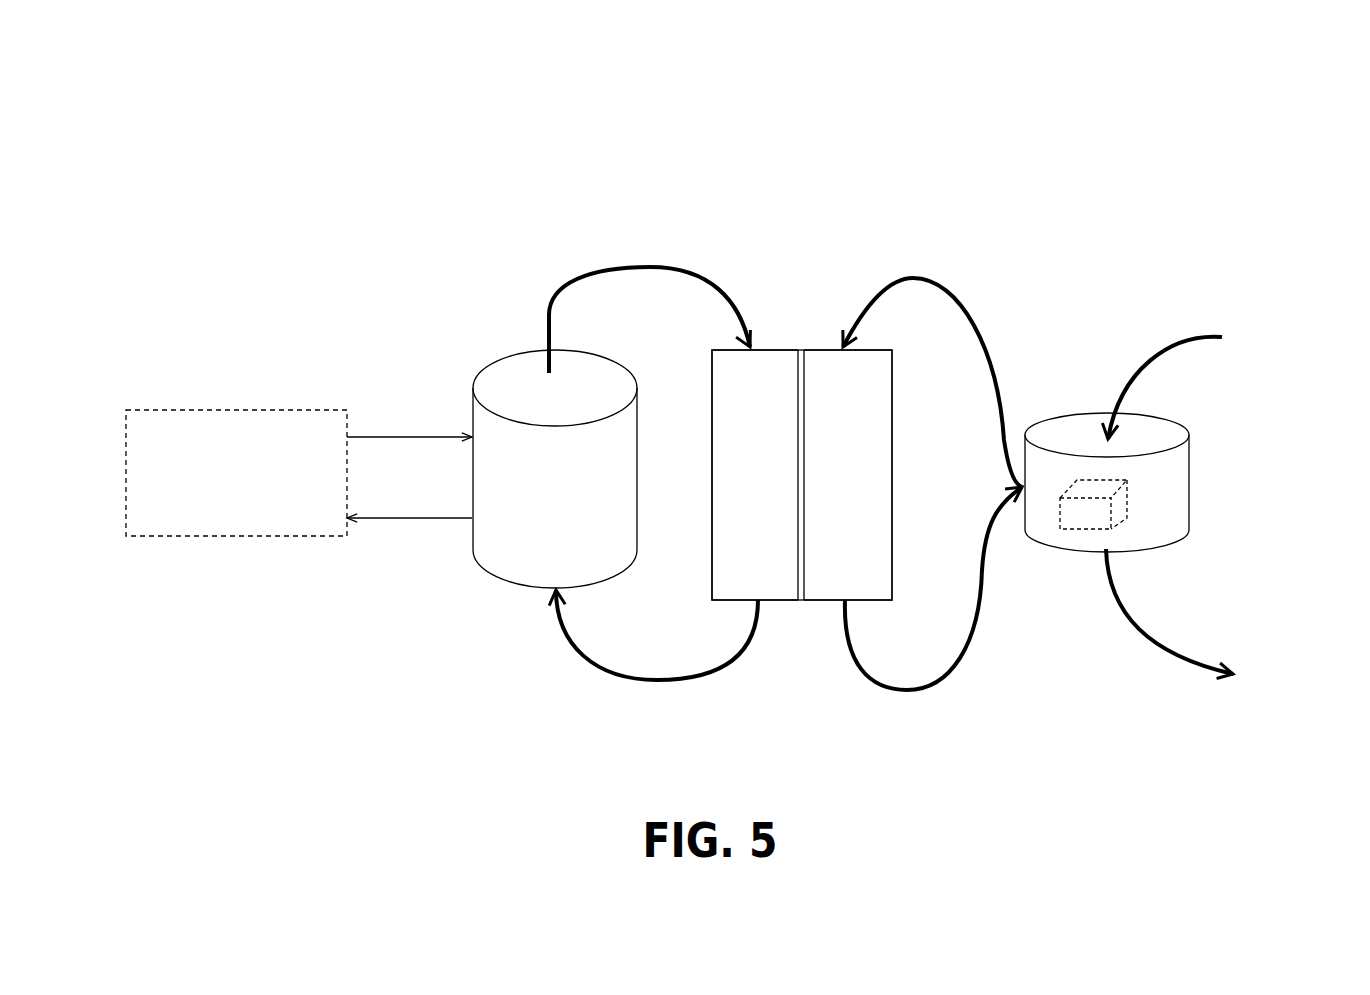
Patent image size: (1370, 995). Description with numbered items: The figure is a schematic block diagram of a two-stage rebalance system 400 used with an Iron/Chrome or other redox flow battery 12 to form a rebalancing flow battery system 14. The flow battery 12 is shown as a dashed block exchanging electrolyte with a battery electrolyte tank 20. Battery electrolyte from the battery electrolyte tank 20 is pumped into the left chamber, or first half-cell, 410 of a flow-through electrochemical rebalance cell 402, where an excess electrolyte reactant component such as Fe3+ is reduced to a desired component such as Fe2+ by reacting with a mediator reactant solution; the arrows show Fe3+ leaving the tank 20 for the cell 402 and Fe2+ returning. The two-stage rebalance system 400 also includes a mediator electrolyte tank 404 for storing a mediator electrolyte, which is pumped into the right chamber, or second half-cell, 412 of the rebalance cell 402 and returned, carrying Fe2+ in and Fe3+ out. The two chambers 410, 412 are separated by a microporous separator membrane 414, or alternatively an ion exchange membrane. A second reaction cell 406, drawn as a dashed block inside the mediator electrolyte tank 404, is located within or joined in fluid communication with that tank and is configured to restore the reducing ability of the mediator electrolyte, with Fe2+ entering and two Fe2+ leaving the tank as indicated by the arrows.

The redox flow battery 12 is at (262, 410).
The rebalancing flow battery system 14 is at (347, 333).
The battery electrolyte tank 20 is at (510, 385).
The two-stage rebalance system 400 is at (623, 148).
The electrochemical rebalance cell 402 is at (783, 465).
The mediator electrolyte tank 404 is at (1151, 407).
The second reaction cell 406 is at (1118, 503).
The left chamber (first half-cell) 410 is at (773, 575).
The right chamber (second half-cell) 412 is at (824, 380).
The microporous separator membrane 414 is at (799, 350).